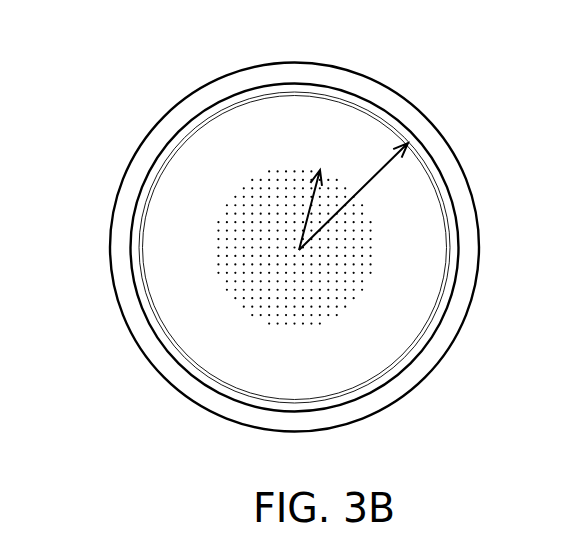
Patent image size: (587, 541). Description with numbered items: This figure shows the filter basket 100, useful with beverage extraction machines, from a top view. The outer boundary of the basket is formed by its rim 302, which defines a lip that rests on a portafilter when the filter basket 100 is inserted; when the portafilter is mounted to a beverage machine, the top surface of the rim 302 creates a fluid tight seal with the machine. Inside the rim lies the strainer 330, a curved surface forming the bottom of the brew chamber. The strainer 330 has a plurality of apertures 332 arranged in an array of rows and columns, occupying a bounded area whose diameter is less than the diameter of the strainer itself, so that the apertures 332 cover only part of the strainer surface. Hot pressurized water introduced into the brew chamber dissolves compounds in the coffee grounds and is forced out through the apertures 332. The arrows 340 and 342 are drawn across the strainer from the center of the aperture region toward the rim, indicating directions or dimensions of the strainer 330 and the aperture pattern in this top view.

The filter basket 100 is at (140, 93).
The rim 302 is at (427, 133).
The strainer 330 is at (418, 212).
The apertures 332 is at (370, 297).
The direction arrow 340 is at (376, 175).
The direction arrow 342 is at (310, 193).